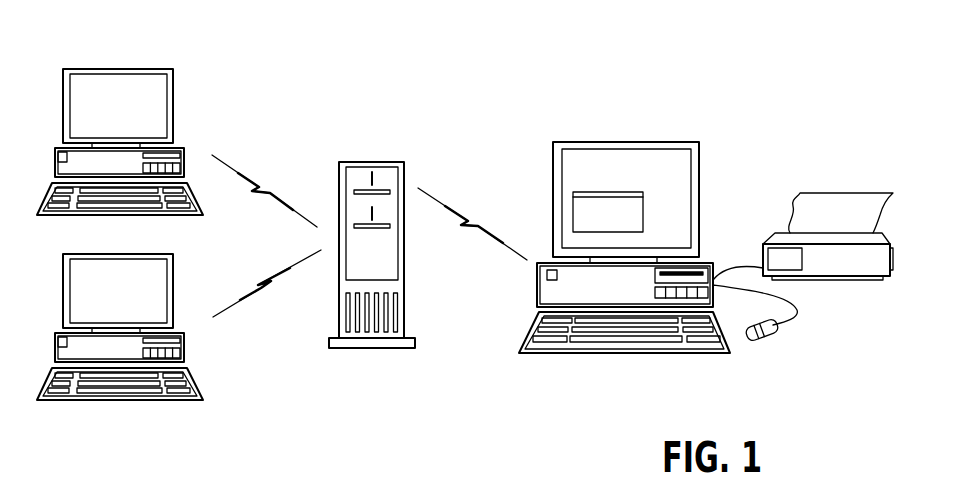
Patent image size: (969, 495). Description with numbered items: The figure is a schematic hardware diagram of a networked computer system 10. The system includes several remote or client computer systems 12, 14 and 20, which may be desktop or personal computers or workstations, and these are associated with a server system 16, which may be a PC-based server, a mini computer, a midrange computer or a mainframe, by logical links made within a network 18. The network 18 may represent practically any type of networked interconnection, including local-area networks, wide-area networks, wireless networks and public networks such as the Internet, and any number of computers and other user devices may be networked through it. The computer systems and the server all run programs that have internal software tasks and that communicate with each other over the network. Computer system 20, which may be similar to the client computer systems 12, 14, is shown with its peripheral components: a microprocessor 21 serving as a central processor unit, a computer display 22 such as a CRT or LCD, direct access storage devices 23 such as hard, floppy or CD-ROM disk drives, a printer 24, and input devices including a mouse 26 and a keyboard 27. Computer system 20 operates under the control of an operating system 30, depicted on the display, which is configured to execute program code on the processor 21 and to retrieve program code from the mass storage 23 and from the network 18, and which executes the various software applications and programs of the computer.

The networked computer system 10 is at (503, 79).
The client computer system 12 is at (158, 67).
The client computer system 14 is at (120, 311).
The server system 16 is at (362, 162).
The network 18 is at (242, 173).
The computer system 20 is at (624, 241).
The microprocessor 21 is at (625, 285).
The computer display 22 is at (626, 183).
The direct access storage devices 23 is at (703, 283).
The printer 24 is at (833, 280).
The mouse 26 is at (778, 332).
The keyboard 27 is at (533, 355).
The operating system 30 is at (631, 186).